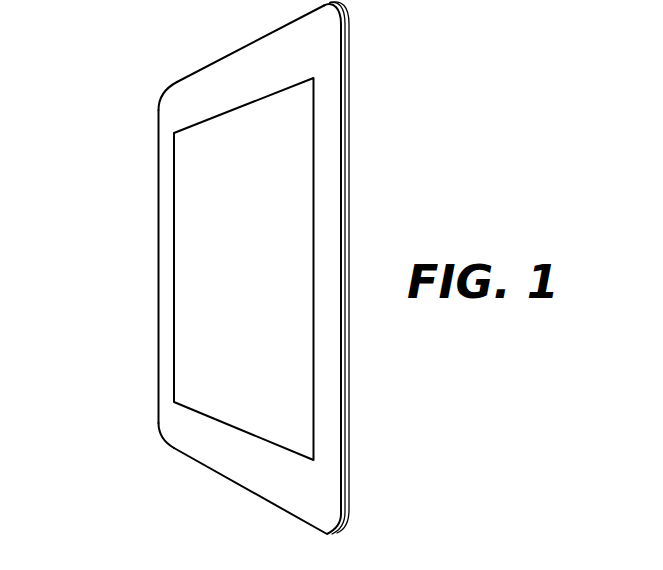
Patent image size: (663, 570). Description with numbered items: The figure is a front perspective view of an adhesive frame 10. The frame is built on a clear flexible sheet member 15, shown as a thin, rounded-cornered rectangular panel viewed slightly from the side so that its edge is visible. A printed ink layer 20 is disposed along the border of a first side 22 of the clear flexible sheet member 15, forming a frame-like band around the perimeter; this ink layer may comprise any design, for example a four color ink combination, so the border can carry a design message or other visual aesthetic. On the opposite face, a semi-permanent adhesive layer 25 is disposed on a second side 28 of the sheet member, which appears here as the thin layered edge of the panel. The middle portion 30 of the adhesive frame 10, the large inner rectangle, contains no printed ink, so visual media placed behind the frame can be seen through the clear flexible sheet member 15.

The adhesive frame 10 is at (105, 68).
The clear flexible sheet member 15 is at (226, 56).
The printed ink layer 20 is at (185, 108).
The first side 22 is at (145, 243).
The semi-permanent adhesive layer 25 is at (350, 94).
The second side 28 is at (362, 153).
The middle portion 30 is at (185, 347).